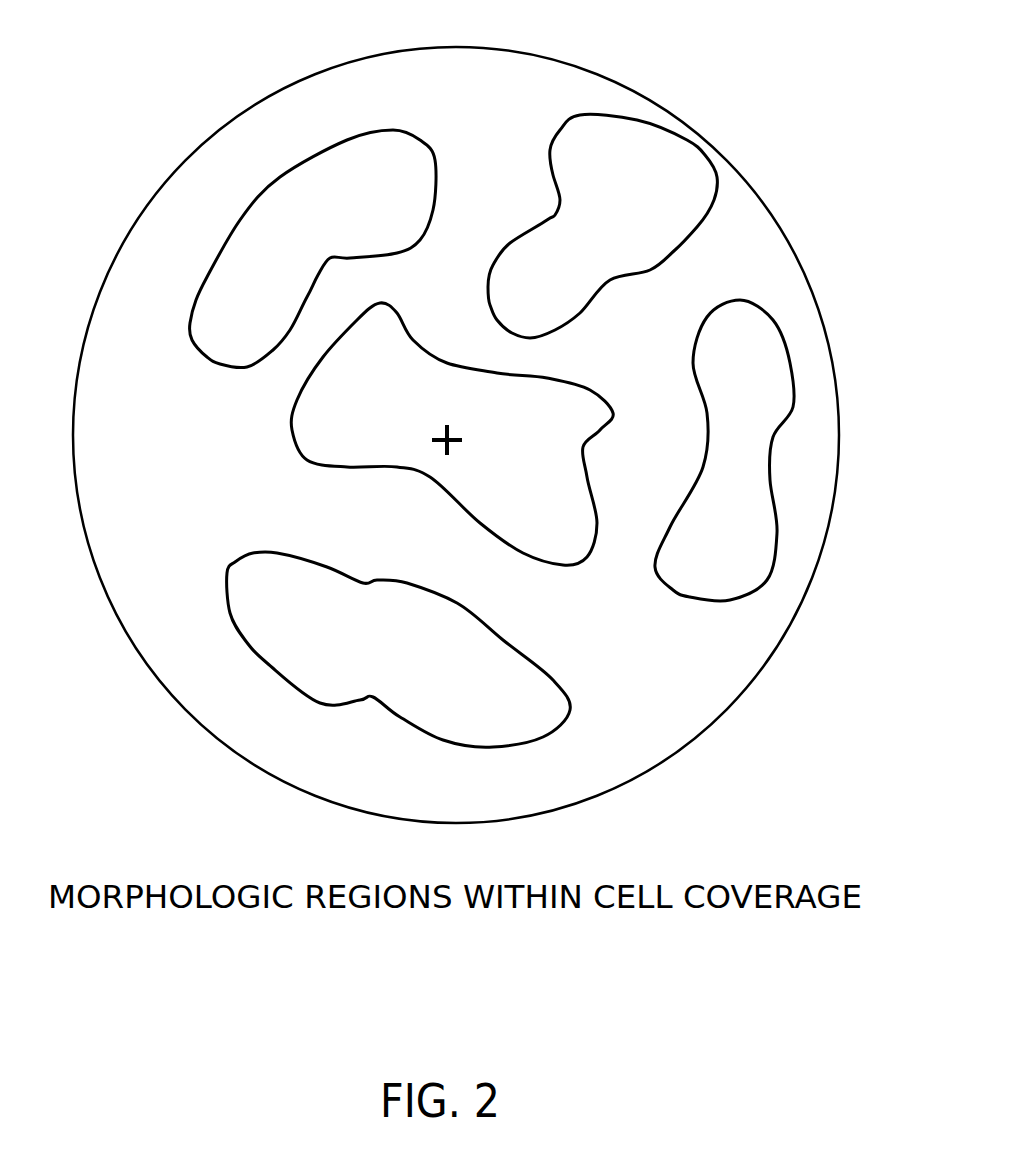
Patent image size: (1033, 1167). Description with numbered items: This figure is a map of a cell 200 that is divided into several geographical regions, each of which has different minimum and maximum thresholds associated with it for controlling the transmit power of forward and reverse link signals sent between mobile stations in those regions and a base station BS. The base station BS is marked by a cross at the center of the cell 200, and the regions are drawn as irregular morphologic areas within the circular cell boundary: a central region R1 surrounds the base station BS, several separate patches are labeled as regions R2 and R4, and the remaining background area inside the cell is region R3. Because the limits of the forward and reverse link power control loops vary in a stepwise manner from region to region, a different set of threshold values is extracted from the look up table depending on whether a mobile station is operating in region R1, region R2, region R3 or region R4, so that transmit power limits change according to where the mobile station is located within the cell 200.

The cell 200 is at (741, 84).
The region R1 is at (452, 434).
The region R2 is at (491, 365).
The region R3 is at (456, 435).
The morphologic region R4 is at (472, 430).
The base station BS is at (460, 422).